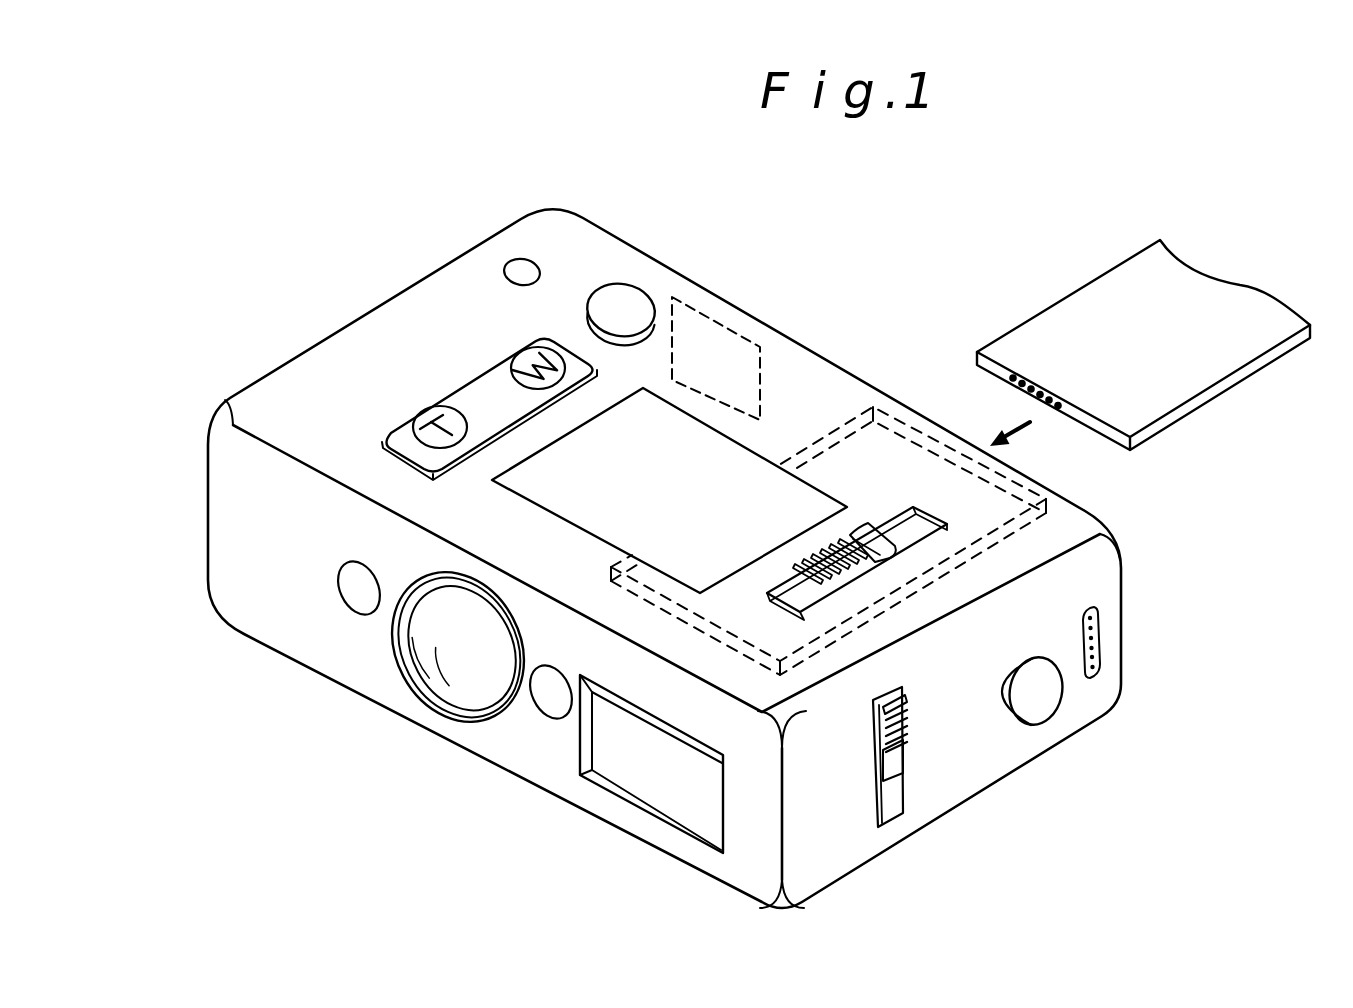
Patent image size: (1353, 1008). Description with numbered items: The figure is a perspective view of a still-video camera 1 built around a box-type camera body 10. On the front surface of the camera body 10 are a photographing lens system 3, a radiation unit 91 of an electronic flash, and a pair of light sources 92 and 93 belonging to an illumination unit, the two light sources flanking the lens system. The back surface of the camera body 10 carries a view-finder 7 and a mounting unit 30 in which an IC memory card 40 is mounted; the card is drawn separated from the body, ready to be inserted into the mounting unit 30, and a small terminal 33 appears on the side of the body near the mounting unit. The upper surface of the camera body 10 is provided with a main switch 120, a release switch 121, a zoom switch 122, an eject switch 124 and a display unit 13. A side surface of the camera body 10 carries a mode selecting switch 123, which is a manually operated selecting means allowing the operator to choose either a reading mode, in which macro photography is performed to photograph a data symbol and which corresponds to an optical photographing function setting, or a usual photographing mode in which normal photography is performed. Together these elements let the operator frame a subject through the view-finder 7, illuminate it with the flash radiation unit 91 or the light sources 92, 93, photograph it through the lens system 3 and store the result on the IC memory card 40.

The still-video camera 1 is at (664, 558).
The photographing lens system 3 is at (455, 688).
The view-finder 7 is at (718, 318).
The camera body 10 is at (307, 380).
The display unit 13 is at (768, 470).
The mounting unit 30 is at (985, 540).
The connector terminal 33 is at (1100, 650).
The IC memory card 40 is at (1068, 325).
The radiation unit of an electronic flash 91 is at (630, 775).
The light source 92 is at (543, 715).
The light source 93 is at (343, 597).
The main switch 120 is at (900, 812).
The release switch 121 is at (625, 298).
The zoom switch 122 is at (523, 350).
The mode selecting switch 123 is at (1047, 697).
The eject switch 124 is at (849, 542).